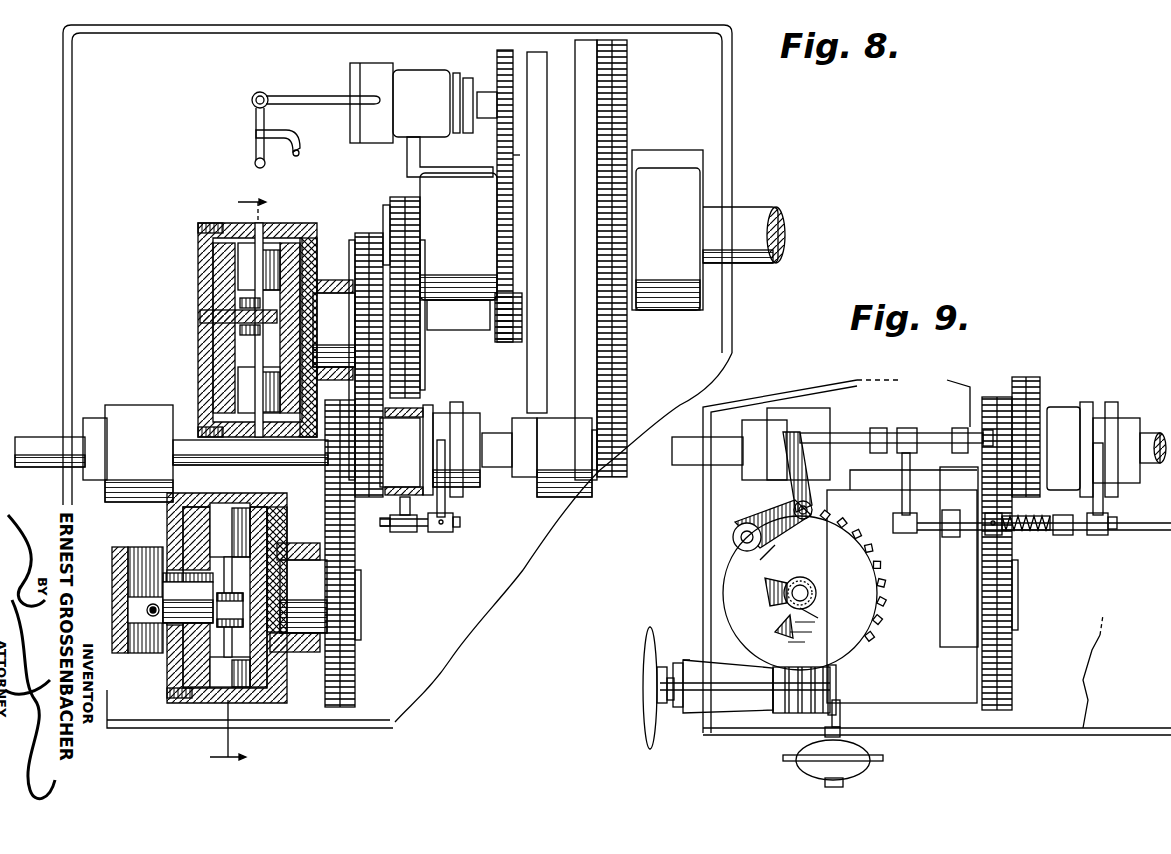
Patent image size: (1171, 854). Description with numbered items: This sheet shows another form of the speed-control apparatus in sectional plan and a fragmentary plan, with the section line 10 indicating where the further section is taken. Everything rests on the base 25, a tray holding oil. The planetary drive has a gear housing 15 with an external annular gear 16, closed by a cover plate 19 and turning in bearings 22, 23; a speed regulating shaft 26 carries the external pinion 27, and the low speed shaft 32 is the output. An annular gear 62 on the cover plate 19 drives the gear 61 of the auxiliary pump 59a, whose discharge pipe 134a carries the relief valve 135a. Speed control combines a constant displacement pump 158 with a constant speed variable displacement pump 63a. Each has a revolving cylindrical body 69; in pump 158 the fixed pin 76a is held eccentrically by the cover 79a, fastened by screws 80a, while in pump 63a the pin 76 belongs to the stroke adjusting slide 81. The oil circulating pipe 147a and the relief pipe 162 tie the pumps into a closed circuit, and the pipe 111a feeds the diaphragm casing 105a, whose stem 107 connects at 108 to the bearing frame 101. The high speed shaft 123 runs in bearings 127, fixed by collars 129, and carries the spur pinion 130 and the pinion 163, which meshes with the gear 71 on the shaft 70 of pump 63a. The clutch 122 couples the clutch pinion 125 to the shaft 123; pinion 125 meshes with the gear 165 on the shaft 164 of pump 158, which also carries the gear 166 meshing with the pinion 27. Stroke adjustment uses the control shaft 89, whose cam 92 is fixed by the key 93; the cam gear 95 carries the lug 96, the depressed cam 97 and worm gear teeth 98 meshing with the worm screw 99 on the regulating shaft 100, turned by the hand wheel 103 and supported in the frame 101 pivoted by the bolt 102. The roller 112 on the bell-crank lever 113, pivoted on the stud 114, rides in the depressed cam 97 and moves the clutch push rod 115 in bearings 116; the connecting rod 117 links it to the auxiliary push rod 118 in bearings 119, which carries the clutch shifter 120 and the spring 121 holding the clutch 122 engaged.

In FIG. 8, the section line 10 is at (238, 484).
In FIG. 8, the gear housing 15 is at (580, 260).
In FIG. 8, the external annular gear 16 is at (628, 352).
In FIG. 8, the cover plate 19 is at (541, 236).
In FIG. 8, the bearing 22 is at (667, 230).
In FIG. 8, the bearing 23 is at (458, 251).
In FIG. 8, the base 25 is at (72, 200).
In FIG. 9, the base 25 is at (703, 535).
In FIG. 8, the speed regulating shaft 26 is at (388, 210).
In FIG. 8, the pinion 27 is at (397, 197).
In FIG. 8, the low speed shaft 32 is at (762, 212).
In FIG. 8, the auxiliary pump 59a is at (360, 68).
In FIG. 8, the gear 61 is at (497, 57).
In FIG. 8, the annular gear 62 is at (513, 197).
In FIG. 8, the constant speed variable displacement pump 63a is at (300, 698).
In FIG. 9, the constant speed variable displacement pump 63a is at (902, 585).
In FIG. 8, the cylindrical body 69 is at (353, 250).
In FIG. 8, the shaft 70 is at (298, 597).
In FIG. 8, the gear 71 is at (355, 658).
In FIG. 9, the gear 71 is at (1012, 660).
In FIG. 8, the pin 76 is at (245, 612).
In FIG. 8, the fixed pin 76a is at (200, 318).
In FIG. 8, the cover 79a is at (198, 281).
In FIG. 8, the screws 80a is at (198, 230).
In FIG. 8, the stroke adjusting slide 81 is at (135, 655).
In FIG. 9, the control shaft 89 is at (817, 590).
In FIG. 9, the cam 92 is at (764, 597).
In FIG. 9, the key 93 is at (804, 584).
In FIG. 9, the cam gear 95 is at (723, 593).
In FIG. 9, the lug 96 is at (796, 637).
In FIG. 9, the depressed cam 97 is at (758, 562).
In FIG. 9, the worm gear teeth 98 is at (822, 612).
In FIG. 9, the worm screw 99 is at (792, 713).
In FIG. 9, the regulating shaft 100 is at (725, 690).
In FIG. 9, the bearing frame 101 is at (683, 662).
In FIG. 9, the bolt 102 is at (695, 700).
In FIG. 9, the hand wheel 103 is at (650, 658).
In FIG. 9, the diaphragm casing 105a is at (812, 770).
In FIG. 9, the stem 107 is at (842, 730).
In FIG. 9, the connection 108 is at (842, 706).
In FIG. 9, the pipe 111a is at (855, 782).
In FIG. 9, the roller 112 is at (735, 553).
In FIG. 9, the bell-crank lever 113 is at (775, 525).
In FIG. 9, the stud 114 is at (802, 520).
In FIG. 9, the clutch push rod 115 is at (835, 435).
In FIG. 9, the stationary bearings 116 is at (950, 432).
In FIG. 9, the connecting rod 117 is at (912, 480).
In FIG. 8, the auxiliary push rod 118 is at (460, 532).
In FIG. 9, the auxiliary push rod 118 is at (1043, 533).
In FIG. 8, the stationary bearings 119 is at (415, 535).
In FIG. 9, the stationary bearings 119 is at (950, 537).
In FIG. 8, the clutch shifter 120 is at (446, 508).
In FIG. 9, the clutch shifter 120 is at (1105, 506).
In FIG. 9, the spring 121 is at (1064, 516).
In FIG. 8, the clutch 122 is at (458, 414).
In FIG. 9, the clutch 122 is at (1100, 410).
In FIG. 8, the high speed shaft 123 is at (33, 470).
In FIG. 9, the high speed shaft 123 is at (673, 467).
In FIG. 8, the clutch pinion 125 is at (397, 533).
In FIG. 9, the clutch pinion 125 is at (1030, 420).
In FIG. 8, the bearings 127 is at (348, 453).
In FIG. 8, the collars 129 is at (93, 418).
In FIG. 8, the spur pinion 130 is at (612, 478).
In FIG. 8, the pipe 134a is at (303, 95).
In FIG. 8, the relief valve 135a is at (251, 100).
In FIG. 8, the oil circulating pipe 147a is at (254, 165).
In FIG. 8, the constant displacement pump 158 is at (293, 238).
In FIG. 8, the relief pipe 162 is at (303, 152).
In FIG. 8, the pinion 163 is at (330, 450).
In FIG. 9, the pinion 163 is at (995, 397).
In FIG. 8, the shaft 164 is at (334, 330).
In FIG. 8, the gear 165 is at (364, 232).
In FIG. 9, the gear 165 is at (1040, 382).
In FIG. 8, the gear 166 is at (421, 352).